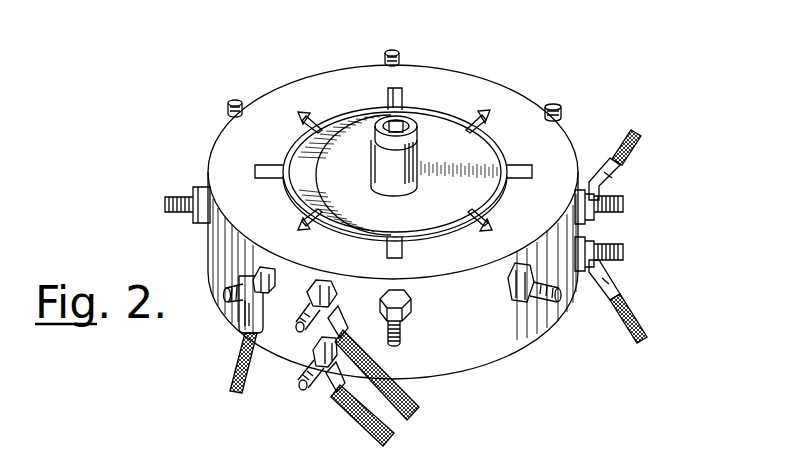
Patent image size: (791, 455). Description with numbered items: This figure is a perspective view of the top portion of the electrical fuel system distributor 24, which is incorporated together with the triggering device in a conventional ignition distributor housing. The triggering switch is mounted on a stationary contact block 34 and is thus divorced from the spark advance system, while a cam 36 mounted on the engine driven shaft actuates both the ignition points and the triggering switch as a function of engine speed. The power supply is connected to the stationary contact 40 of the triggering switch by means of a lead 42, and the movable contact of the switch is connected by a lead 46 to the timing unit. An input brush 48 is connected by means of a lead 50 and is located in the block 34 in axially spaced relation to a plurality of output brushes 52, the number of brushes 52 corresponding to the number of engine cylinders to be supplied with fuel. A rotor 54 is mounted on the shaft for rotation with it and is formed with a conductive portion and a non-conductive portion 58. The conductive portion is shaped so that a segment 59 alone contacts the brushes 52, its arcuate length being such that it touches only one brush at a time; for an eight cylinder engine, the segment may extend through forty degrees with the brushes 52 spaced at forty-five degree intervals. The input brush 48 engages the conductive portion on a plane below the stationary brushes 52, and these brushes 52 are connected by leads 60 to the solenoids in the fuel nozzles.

The electrical fuel system distributor 24 is at (208, 144).
The stationary contact block 34 is at (513, 352).
The cam 36 is at (448, 372).
The stationary contact 40 is at (292, 361).
The lead 42 is at (413, 398).
The lead 46 is at (400, 430).
The input brush 48 is at (613, 240).
The lead 50 is at (640, 320).
The output brushes 52 is at (480, 110).
The rotor 54 is at (353, 117).
The non-conductive portion 58 is at (487, 143).
The segment 59 is at (283, 153).
The leads 60 is at (633, 153).